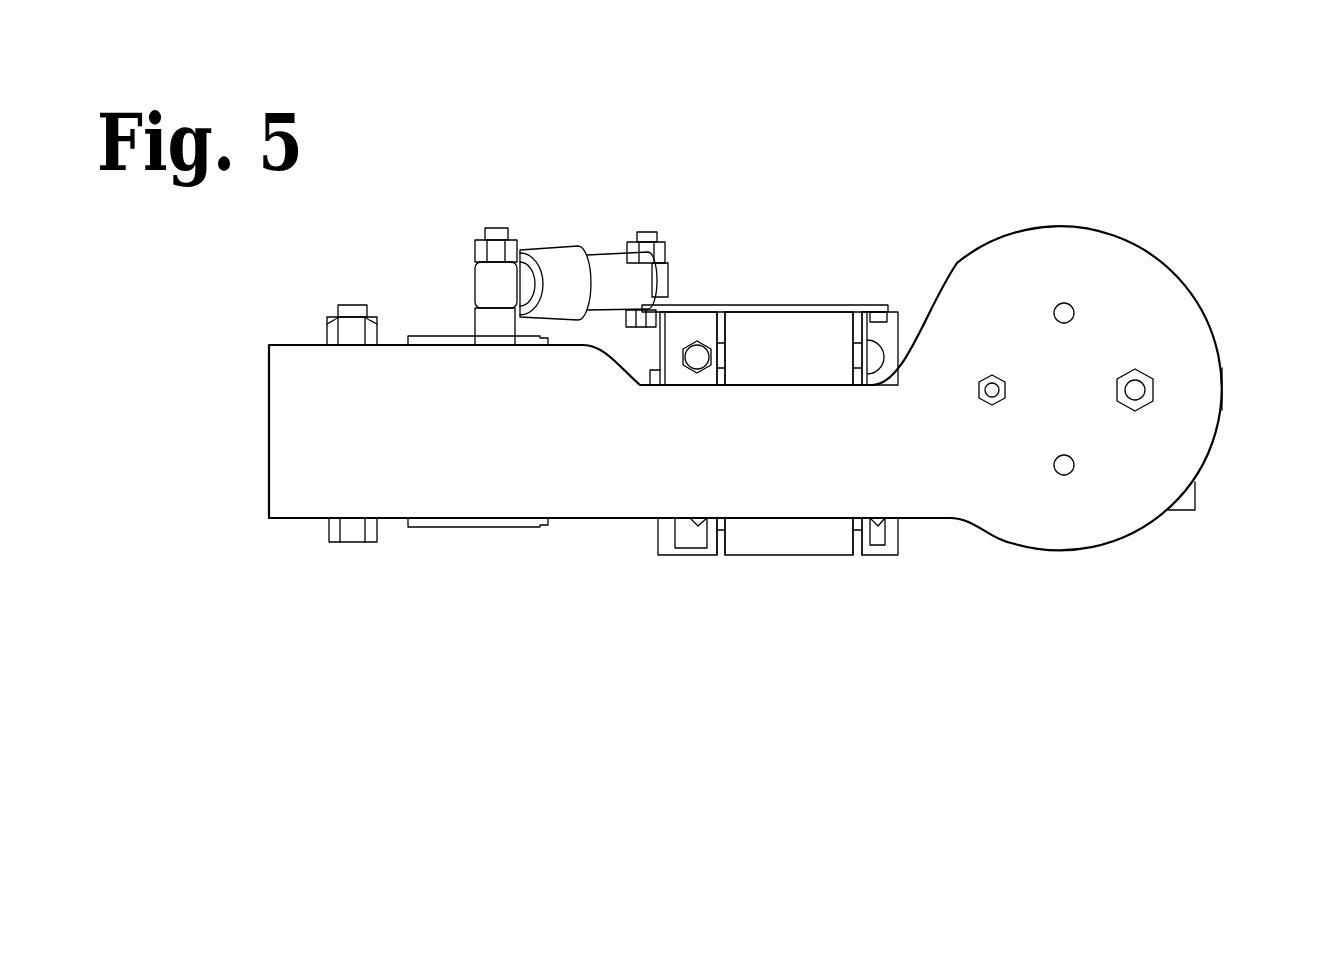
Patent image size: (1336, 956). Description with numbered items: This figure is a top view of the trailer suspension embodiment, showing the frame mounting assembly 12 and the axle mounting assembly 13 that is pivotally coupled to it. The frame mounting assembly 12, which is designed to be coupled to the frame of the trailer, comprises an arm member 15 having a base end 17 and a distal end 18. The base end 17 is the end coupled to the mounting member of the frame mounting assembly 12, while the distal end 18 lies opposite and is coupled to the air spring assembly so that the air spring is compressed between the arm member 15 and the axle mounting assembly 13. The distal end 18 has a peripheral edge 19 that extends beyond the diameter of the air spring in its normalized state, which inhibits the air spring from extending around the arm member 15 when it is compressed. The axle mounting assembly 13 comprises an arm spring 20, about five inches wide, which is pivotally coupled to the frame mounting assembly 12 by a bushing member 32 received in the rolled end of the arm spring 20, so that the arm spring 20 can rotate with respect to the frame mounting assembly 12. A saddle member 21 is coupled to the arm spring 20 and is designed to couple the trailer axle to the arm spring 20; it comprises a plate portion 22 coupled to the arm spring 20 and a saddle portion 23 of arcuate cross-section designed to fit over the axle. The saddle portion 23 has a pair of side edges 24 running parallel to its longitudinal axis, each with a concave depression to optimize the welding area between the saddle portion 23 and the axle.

The frame mounting assembly 12 is at (235, 437).
The axle mounting assembly 13 is at (733, 255).
The arm member 15 is at (600, 478).
The base end 17 is at (302, 410).
The distal end 18 is at (1173, 368).
The peripheral edge 19 is at (1090, 225).
The arm spring 20 is at (1190, 502).
The saddle member 21 is at (758, 304).
The plate portion 22 is at (677, 333).
The saddle portion 23 is at (813, 335).
The side edges 24 is at (883, 318).
The bushing member 32 is at (565, 227).